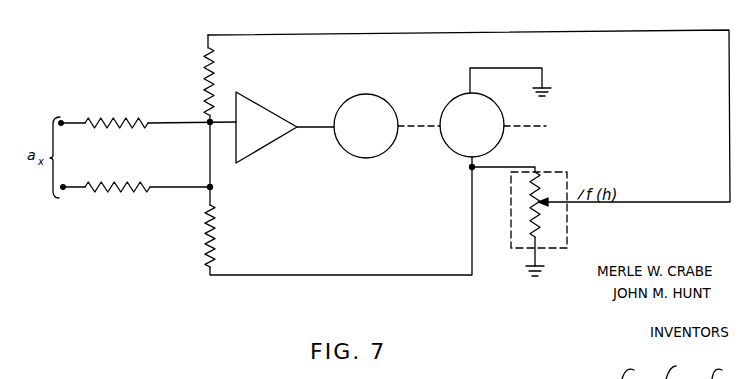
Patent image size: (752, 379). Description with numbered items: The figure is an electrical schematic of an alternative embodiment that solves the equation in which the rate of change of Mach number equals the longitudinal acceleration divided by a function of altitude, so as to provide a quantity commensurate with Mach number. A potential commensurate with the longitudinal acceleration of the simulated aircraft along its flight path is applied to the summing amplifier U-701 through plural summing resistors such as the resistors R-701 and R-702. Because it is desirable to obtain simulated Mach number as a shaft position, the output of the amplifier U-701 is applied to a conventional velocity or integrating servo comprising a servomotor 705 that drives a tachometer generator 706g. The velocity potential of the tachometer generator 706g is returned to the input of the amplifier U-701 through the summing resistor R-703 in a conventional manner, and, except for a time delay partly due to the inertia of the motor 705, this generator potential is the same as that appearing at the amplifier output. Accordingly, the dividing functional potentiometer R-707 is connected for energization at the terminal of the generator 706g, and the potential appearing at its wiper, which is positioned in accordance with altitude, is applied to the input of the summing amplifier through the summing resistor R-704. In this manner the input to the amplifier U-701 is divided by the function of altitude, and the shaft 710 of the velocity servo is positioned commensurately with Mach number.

The summing resistor R-701 is at (139, 99).
The summing resistor R-702 is at (141, 164).
The summing resistor R-703 is at (180, 236).
The summing resistor R-704 is at (204, 78).
The summing amplifier U-701 is at (305, 96).
The servomotor 705 is at (341, 151).
The tachometer generator 706g is at (442, 146).
The shaft 710 is at (588, 126).
The dividing functional potentiometer R-707 is at (530, 214).